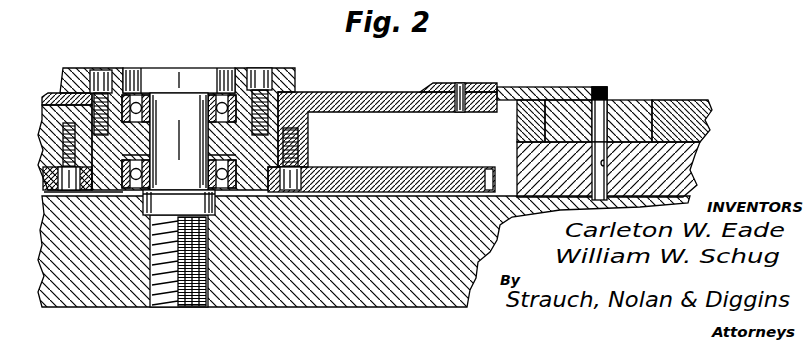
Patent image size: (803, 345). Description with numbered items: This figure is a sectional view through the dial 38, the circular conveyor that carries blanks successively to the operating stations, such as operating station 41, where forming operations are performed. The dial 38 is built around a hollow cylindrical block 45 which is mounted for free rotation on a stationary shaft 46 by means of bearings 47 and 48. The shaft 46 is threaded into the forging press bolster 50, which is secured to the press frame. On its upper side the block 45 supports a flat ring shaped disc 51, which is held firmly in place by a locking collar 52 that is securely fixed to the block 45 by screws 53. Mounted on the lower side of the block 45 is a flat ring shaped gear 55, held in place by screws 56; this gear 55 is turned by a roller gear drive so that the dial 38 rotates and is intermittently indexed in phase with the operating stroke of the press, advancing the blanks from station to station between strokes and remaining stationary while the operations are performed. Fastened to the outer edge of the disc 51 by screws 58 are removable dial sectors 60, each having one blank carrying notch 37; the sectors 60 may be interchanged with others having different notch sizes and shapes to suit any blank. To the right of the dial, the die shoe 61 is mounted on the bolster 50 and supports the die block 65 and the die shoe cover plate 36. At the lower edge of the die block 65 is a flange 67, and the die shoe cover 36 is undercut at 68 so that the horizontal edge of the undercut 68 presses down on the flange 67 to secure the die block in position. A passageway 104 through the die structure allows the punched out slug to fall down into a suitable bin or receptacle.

The die shoe cover plate 36 is at (706, 100).
The notch 37 is at (604, 87).
The dial 38 is at (401, 91).
The operating station 41 is at (614, 94).
The hollow cylindrical block 45 is at (308, 150).
The stationary shaft 46 is at (198, 120).
The bearing 47 is at (143, 92).
The bearing 48 is at (224, 197).
The forging press bolster 50 is at (370, 307).
The flat ring shaped disc 51 is at (331, 92).
The locking collar 52 is at (76, 68).
The screws 53 is at (257, 68).
The flat ring shaped gear 55 is at (402, 150).
The screws 56 is at (70, 192).
The screws 58 is at (480, 62).
The dial sector 60 is at (538, 87).
The die shoe 61 is at (516, 158).
The die block 65 is at (648, 100).
The flange 67 is at (657, 142).
The undercut 68 is at (542, 133).
The passageway 104 is at (604, 163).